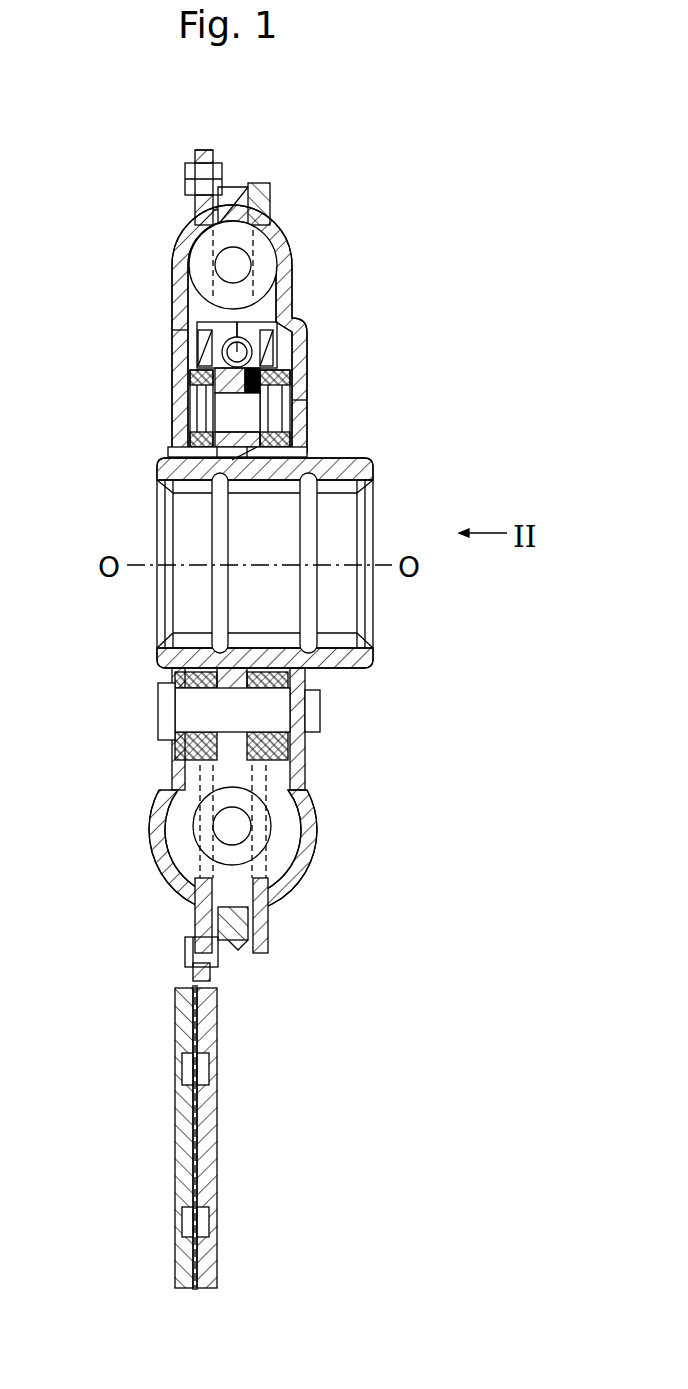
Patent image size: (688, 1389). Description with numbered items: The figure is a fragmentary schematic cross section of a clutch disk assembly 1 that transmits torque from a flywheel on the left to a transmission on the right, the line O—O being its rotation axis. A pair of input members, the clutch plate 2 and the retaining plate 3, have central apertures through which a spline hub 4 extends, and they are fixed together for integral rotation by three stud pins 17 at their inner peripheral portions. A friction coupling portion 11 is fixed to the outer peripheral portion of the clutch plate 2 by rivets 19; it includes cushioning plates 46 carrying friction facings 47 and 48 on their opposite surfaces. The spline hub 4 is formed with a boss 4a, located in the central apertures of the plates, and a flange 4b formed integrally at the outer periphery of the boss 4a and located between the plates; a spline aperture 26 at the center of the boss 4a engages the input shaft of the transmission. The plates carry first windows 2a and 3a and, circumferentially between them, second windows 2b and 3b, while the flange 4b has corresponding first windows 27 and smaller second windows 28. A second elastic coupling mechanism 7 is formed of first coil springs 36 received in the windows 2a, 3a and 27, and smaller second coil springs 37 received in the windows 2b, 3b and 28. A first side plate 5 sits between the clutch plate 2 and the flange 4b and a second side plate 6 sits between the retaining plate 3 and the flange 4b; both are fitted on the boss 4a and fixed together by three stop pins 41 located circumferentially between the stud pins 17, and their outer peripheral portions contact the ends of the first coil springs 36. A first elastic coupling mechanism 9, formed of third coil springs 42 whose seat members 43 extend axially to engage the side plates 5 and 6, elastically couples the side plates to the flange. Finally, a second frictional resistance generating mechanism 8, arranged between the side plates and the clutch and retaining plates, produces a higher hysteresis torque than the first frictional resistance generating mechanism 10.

The clutch disk assembly 1 is at (424, 378).
The clutch plate 2 is at (175, 380).
The first window 2a is at (157, 798).
The second window 2b is at (180, 248).
The retaining plate 3 is at (298, 385).
The first window 3a is at (308, 790).
The second window 3b is at (287, 246).
The spline hub 4 is at (269, 575).
The boss 4a is at (350, 463).
The flange 4b is at (305, 746).
The first side plate 5 is at (180, 330).
The second side plate 6 is at (277, 318).
The second elastic coupling mechanism 7 is at (323, 785).
The second frictional resistance generating mechanism 8 is at (290, 405).
The first elastic coupling mechanism 9 is at (283, 348).
The first frictional resistance generating mechanism 10 is at (245, 455).
The friction coupling portion 11 is at (231, 1137).
The stud pins 17 is at (163, 735).
The rivets 19 is at (203, 182).
The spline aperture 26 is at (245, 488).
The first windows 27 is at (197, 913).
The second windows 28 is at (245, 205).
The first coil springs 36 is at (183, 845).
The second coil springs 37 is at (270, 215).
The stop pins 41 is at (232, 412).
The third coil springs 42 is at (255, 300).
The seat members 43 is at (200, 352).
The cushioning plates 46 is at (183, 1187).
The friction facing 47 is at (185, 1100).
The friction facing 48 is at (207, 1112).